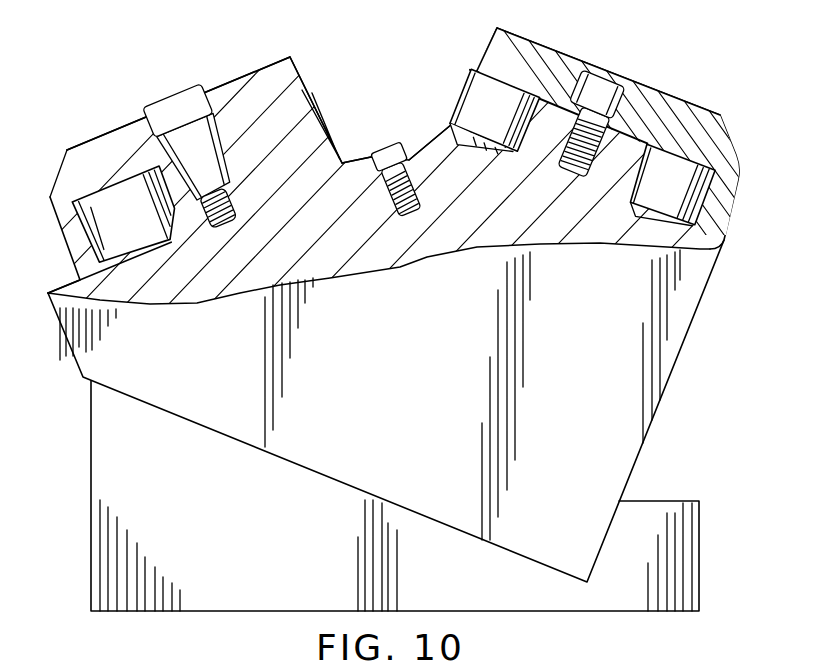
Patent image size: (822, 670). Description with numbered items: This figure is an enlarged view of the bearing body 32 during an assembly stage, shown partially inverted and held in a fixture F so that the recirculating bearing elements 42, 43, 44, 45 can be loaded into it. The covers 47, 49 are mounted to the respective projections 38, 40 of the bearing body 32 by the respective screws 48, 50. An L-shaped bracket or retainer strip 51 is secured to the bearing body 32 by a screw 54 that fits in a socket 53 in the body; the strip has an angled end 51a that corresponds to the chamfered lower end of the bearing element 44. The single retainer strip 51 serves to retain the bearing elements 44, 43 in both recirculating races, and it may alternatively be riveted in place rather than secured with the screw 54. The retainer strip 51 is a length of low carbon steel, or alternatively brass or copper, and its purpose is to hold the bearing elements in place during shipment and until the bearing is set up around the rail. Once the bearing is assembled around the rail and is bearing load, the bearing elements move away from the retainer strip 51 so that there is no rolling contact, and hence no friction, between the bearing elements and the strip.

The bearing body 32 is at (680, 303).
The projection 38 is at (597, 193).
The projection 40 is at (168, 175).
The recirculating bearing element 42 is at (690, 192).
The recirculating bearing element 43 is at (478, 83).
The recirculating bearing element 44 is at (310, 113).
The recirculating bearing element 45 is at (103, 223).
The cover 47 is at (552, 67).
The screw 48 is at (613, 80).
The cover 49 is at (273, 78).
The screw 50 is at (185, 103).
The retainer strip 51 is at (442, 127).
The angled end 51a is at (350, 165).
The socket 53 is at (417, 193).
The screw 54 is at (393, 142).
The fixture F is at (687, 523).